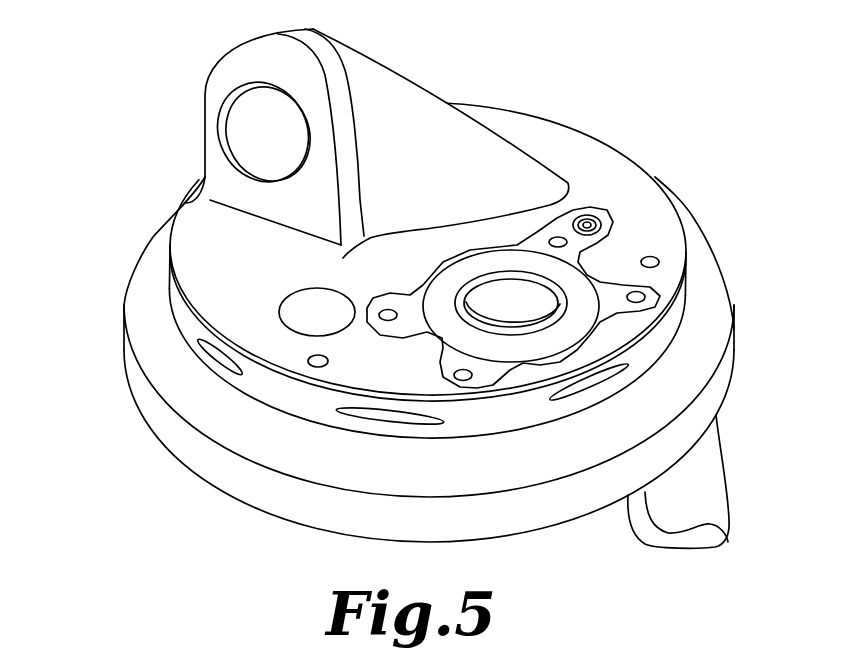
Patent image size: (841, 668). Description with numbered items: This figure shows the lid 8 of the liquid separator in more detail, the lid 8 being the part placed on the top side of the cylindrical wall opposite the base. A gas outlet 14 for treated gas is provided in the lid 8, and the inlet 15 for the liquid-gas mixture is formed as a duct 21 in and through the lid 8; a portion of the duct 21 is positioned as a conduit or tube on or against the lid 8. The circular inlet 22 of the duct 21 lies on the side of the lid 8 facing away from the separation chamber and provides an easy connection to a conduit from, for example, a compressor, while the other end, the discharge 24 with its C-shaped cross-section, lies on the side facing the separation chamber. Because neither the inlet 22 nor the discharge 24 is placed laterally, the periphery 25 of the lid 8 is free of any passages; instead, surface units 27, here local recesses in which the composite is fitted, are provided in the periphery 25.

The lid 8 is at (87, 73).
The gas outlet 14 is at (490, 292).
The inlet 15 is at (246, 103).
The duct 21 is at (390, 113).
The circular inlet 22 is at (250, 119).
The discharge 24 is at (705, 537).
The periphery 25 is at (167, 355).
The surface units 27 is at (413, 420).